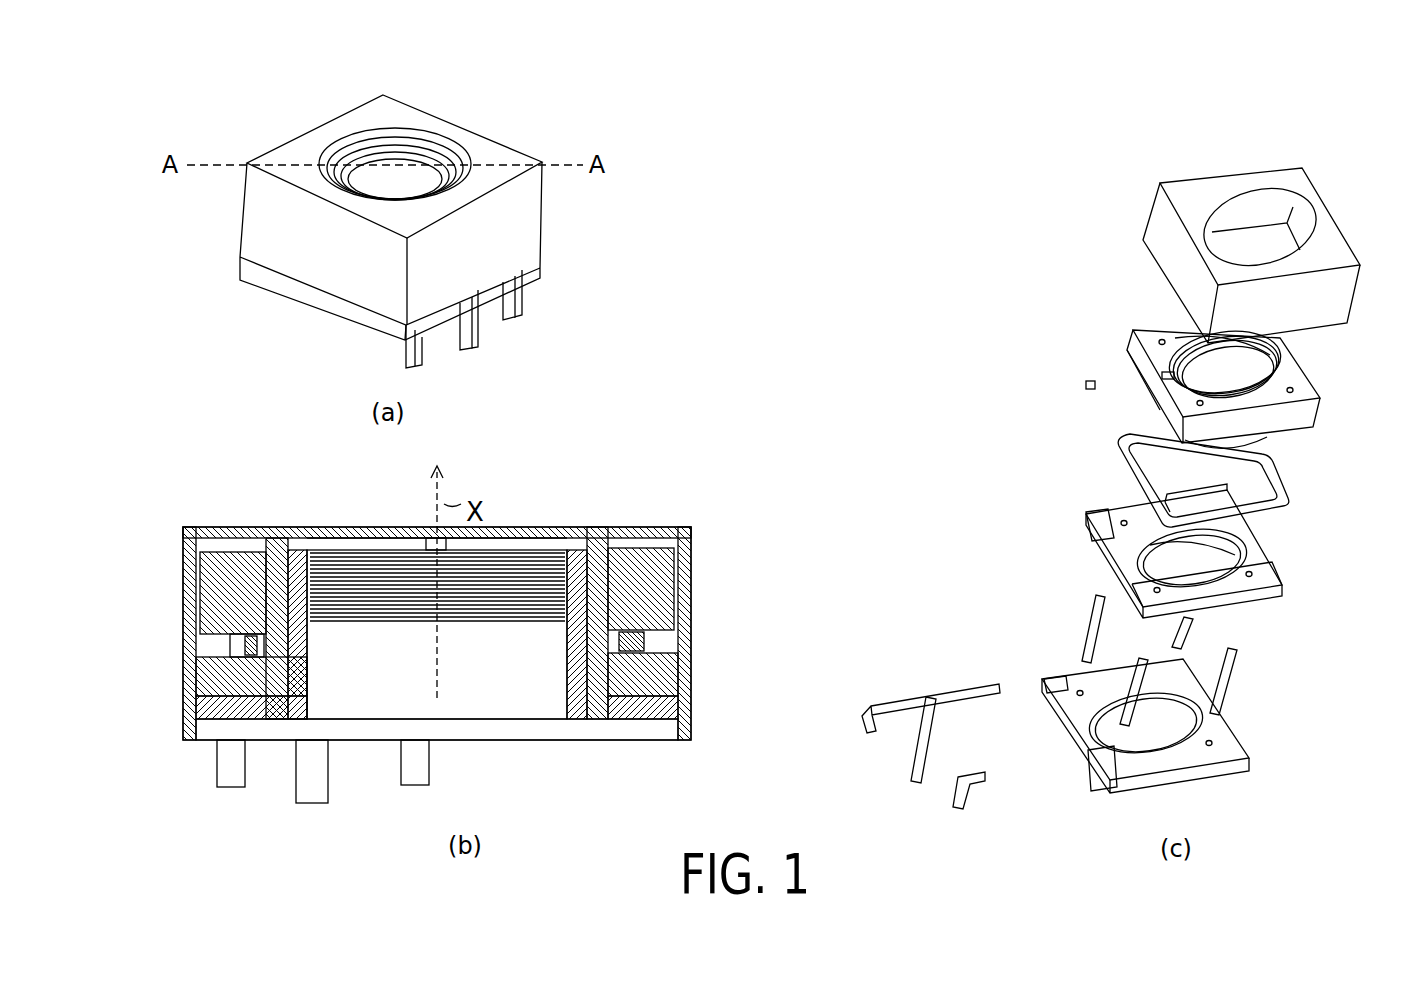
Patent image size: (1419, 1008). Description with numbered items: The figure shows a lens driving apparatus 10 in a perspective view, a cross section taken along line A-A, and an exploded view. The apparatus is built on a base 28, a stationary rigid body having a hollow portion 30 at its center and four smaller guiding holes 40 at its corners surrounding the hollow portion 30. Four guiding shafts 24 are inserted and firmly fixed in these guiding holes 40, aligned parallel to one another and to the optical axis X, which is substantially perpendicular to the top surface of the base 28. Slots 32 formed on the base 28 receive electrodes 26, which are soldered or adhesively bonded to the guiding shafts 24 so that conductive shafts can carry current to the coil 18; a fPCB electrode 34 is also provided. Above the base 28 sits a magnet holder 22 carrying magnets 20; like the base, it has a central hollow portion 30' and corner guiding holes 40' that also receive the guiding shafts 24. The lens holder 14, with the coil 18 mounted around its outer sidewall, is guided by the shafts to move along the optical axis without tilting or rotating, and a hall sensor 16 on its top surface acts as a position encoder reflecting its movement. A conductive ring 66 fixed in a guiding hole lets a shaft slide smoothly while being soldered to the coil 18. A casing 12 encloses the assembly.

The lens driving apparatus 10 is at (477, 72).
The casing 12 is at (543, 217).
The lens holder 14 is at (360, 147).
The hall sensor 16 is at (1085, 385).
The coil 18 is at (644, 642).
The magnets 20 is at (1110, 558).
The magnet holder 22 is at (659, 676).
The guiding shafts 24 is at (290, 544).
The electrodes 26 is at (513, 317).
The base 28 is at (238, 263).
The hollow portion 30 is at (1214, 722).
The hollow portion 30' is at (1283, 450).
The slots 32 is at (1067, 682).
The fPCB electrode 34 is at (470, 347).
The guiding holes 40 is at (1210, 735).
The guiding holes 40' is at (1269, 500).
The conductive ring 66 is at (294, 647).